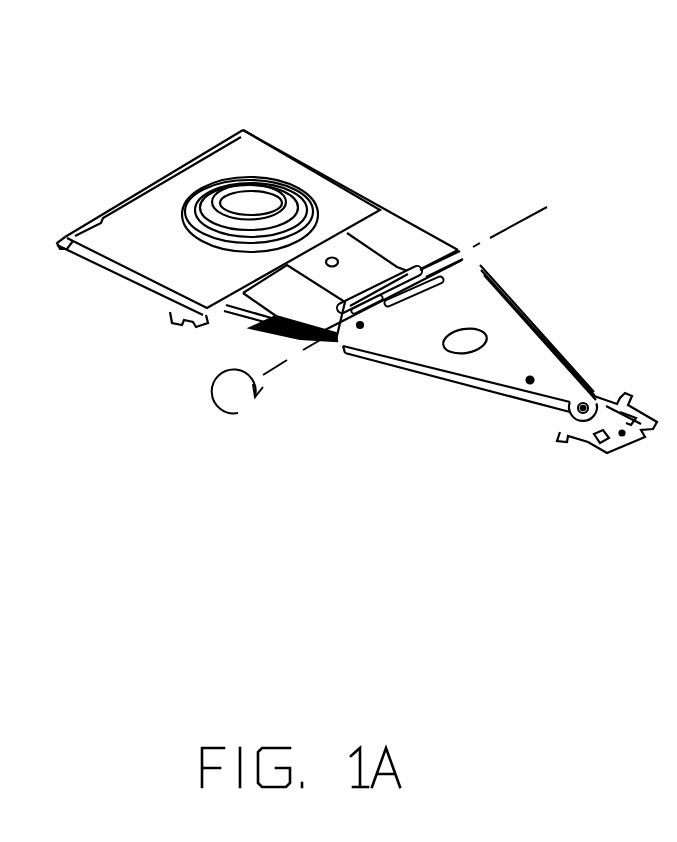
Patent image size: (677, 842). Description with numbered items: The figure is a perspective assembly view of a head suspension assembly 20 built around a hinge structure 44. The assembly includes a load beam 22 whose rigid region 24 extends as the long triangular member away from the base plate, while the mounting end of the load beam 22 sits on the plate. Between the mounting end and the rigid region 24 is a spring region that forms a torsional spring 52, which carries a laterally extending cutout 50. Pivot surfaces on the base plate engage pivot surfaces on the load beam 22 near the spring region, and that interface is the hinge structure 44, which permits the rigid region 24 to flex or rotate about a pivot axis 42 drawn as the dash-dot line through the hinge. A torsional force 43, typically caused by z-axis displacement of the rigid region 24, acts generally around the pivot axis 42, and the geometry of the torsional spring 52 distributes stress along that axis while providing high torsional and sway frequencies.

The head suspension assembly 20 is at (358, 547).
The load beam 22 is at (485, 393).
The rigid region 24 is at (498, 318).
The pivot axis 42 is at (257, 380).
The torsional force 43 is at (216, 381).
The hinge structure 44 is at (460, 255).
The laterally extending cutout 50 is at (387, 313).
The torsional spring 52 is at (342, 340).